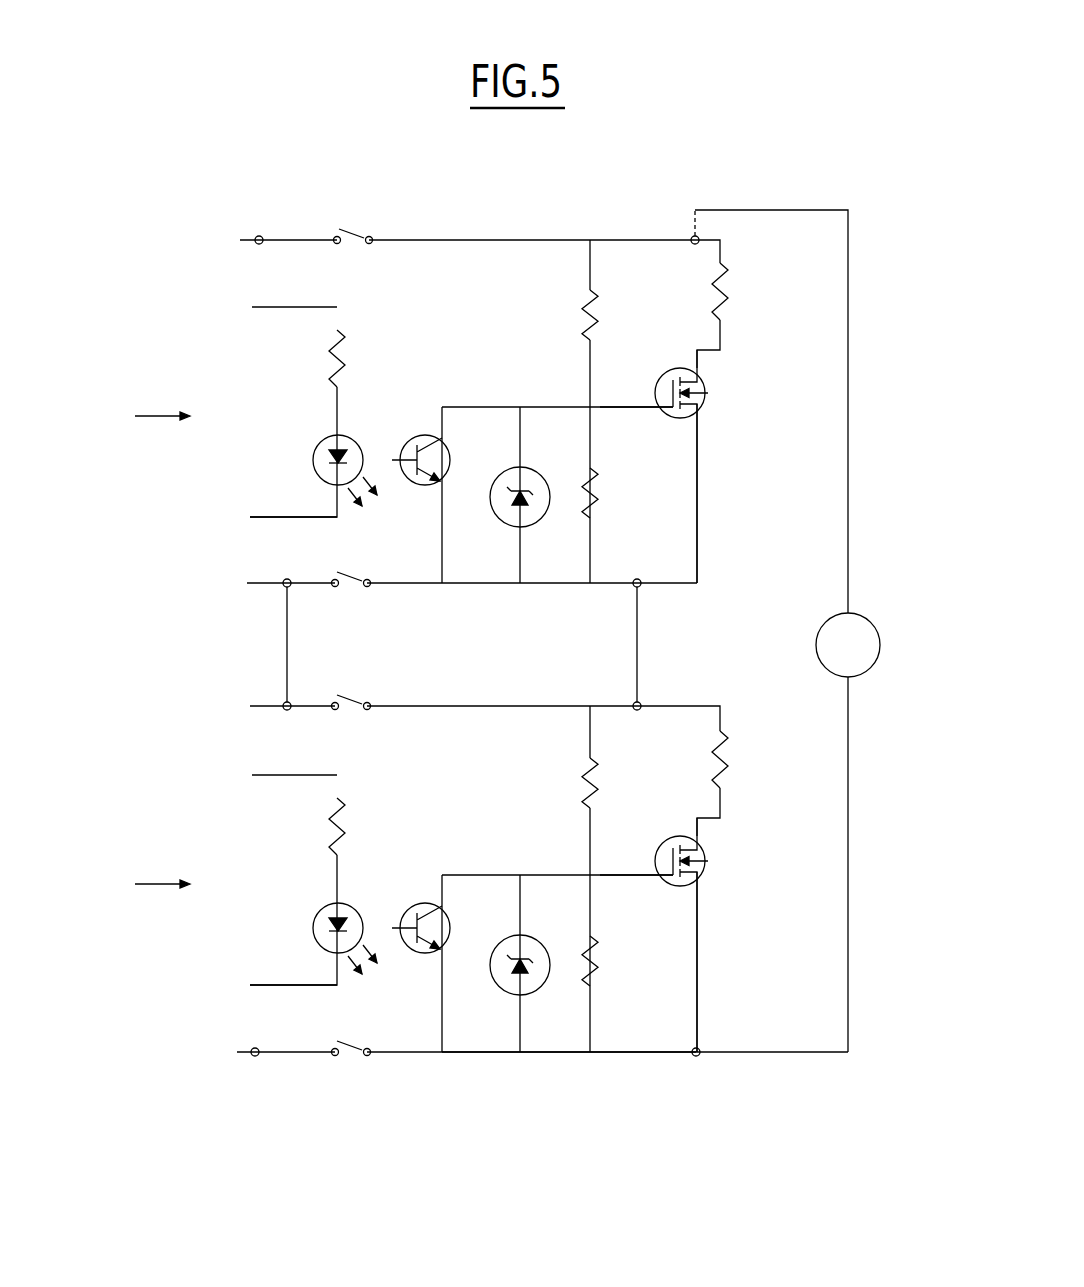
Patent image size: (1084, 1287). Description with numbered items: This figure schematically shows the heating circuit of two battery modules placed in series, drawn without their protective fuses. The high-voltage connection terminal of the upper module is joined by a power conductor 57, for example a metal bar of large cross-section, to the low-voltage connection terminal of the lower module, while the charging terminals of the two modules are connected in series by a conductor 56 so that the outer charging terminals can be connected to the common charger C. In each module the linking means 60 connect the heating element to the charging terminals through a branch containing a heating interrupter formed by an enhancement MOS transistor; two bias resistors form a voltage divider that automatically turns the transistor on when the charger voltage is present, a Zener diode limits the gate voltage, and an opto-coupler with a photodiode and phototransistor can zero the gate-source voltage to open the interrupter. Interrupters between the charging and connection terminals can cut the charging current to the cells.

The conductor 56 is at (635, 640).
The power conductor 57 is at (285, 680).
The linking means 60 is at (569, 1100).
The common charger C is at (880, 645).